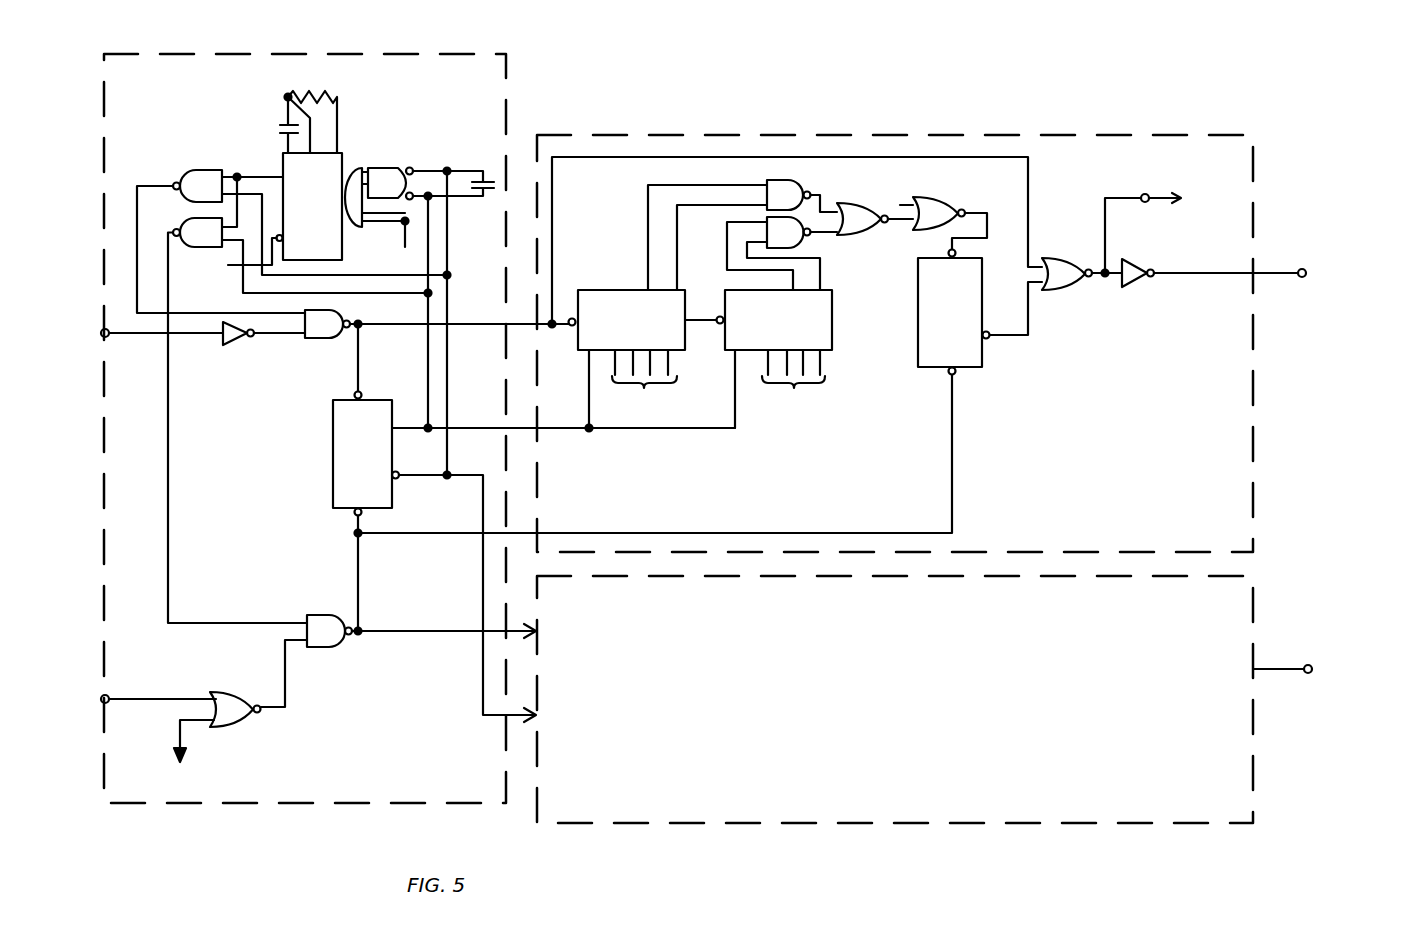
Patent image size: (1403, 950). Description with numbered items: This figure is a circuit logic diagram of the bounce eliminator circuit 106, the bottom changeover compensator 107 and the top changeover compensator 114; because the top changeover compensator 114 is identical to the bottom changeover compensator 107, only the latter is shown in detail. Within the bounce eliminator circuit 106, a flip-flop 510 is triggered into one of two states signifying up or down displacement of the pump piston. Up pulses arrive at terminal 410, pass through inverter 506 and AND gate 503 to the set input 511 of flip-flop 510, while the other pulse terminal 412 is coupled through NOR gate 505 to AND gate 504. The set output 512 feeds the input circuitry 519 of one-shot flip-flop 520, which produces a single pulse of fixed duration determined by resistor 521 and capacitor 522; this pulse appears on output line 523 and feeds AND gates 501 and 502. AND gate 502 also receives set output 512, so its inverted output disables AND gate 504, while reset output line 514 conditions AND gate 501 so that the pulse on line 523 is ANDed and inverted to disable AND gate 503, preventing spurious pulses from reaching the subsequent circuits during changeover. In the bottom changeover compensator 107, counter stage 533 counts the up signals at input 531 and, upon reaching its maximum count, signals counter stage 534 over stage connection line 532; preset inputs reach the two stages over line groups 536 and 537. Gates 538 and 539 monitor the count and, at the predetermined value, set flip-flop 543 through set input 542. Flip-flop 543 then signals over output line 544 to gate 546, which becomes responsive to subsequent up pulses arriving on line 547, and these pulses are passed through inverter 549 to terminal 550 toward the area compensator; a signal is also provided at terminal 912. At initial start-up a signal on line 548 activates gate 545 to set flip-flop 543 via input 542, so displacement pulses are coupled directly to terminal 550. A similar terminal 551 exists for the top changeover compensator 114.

The bounce eliminator circuit 106 is at (506, 58).
The bottom changeover compensator 107 is at (923, 135).
The top changeover compensator 114 is at (720, 828).
The terminal 410 is at (105, 329).
The terminal 412 is at (105, 695).
The AND gate 501 is at (195, 168).
The AND gate 502 is at (190, 220).
The AND gate 503 is at (318, 338).
The AND gate 504 is at (322, 614).
The NOR gate 505 is at (228, 691).
The inverter 506 is at (238, 345).
The flip-flop 510 is at (333, 452).
The set input 511 is at (362, 393).
The set output 512 is at (405, 426).
The reset output line 514 is at (408, 478).
The input circuitry 519 is at (405, 167).
The one-shot flip-flop 520 is at (343, 247).
The resistor 521 is at (312, 91).
The capacitor 522 is at (280, 127).
The output line 523 is at (270, 177).
The input 531 is at (560, 325).
The stage connection line 532 is at (700, 322).
The counter stage 533 is at (612, 290).
The counter stage 534 is at (740, 290).
The line group 536 is at (644, 393).
The line group 537 is at (793, 393).
The gate 538 is at (790, 180).
The gate 539 is at (800, 242).
The set input 542 is at (950, 250).
The flip-flop 543 is at (918, 330).
The output line 544 is at (1028, 318).
The gate 545 is at (948, 198).
The gate 546 is at (1062, 258).
The line 547 is at (1028, 177).
The line 548 is at (900, 205).
The inverter 549 is at (1138, 259).
The terminal 550 is at (1305, 269).
The terminal 551 is at (1290, 672).
The terminal 912 is at (1148, 194).